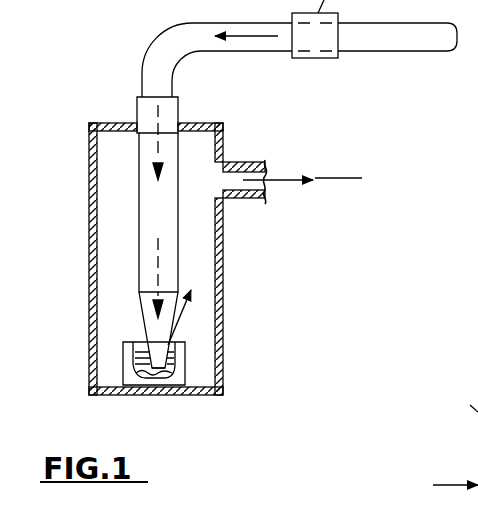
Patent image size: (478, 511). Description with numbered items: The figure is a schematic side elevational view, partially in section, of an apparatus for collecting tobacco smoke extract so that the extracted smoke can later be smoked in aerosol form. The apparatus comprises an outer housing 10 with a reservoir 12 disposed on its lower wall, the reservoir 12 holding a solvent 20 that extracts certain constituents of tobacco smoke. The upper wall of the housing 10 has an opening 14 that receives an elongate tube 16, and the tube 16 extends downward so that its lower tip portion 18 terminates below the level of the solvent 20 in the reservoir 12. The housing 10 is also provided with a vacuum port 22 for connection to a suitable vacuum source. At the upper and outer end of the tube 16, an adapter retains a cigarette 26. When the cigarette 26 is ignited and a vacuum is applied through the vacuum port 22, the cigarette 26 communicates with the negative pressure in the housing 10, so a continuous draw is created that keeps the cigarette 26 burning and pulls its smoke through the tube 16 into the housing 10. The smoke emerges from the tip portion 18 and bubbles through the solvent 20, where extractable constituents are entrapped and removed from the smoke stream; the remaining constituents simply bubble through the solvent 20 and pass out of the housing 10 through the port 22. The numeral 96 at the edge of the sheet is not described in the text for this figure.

The outer housing 10 is at (223, 261).
The reservoir 12 is at (184, 362).
The opening 14 is at (181, 119).
The elongate tube 16 is at (163, 204).
The lower tip portion 18 is at (157, 332).
The solvent 20 is at (140, 357).
The vacuum port 22 is at (243, 162).
The cigarette 26 is at (400, 41).
The fragment of adjacent figure 96 is at (477, 465).